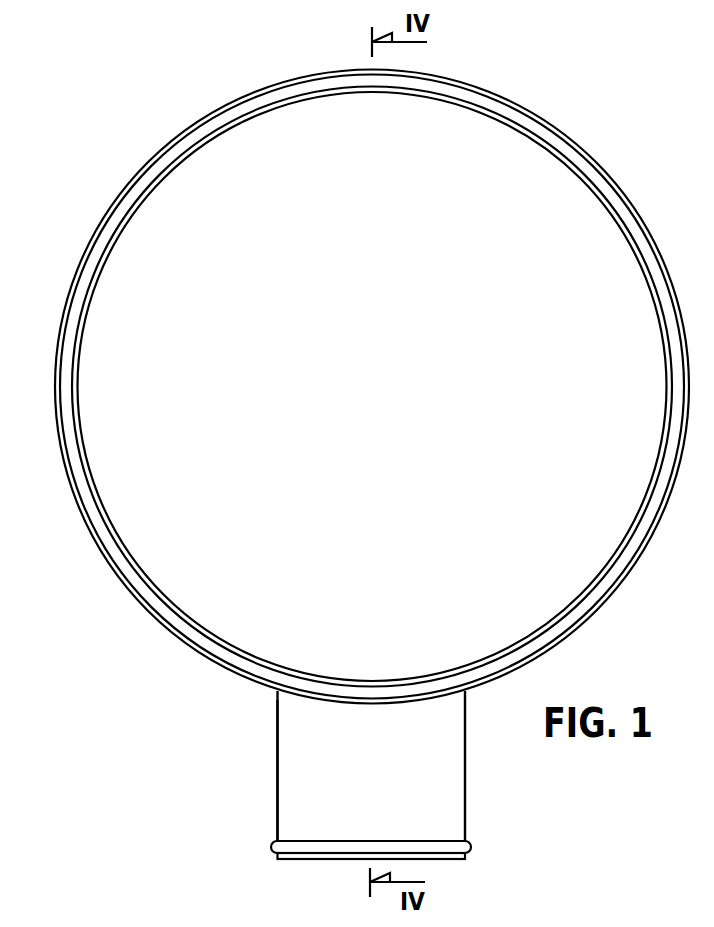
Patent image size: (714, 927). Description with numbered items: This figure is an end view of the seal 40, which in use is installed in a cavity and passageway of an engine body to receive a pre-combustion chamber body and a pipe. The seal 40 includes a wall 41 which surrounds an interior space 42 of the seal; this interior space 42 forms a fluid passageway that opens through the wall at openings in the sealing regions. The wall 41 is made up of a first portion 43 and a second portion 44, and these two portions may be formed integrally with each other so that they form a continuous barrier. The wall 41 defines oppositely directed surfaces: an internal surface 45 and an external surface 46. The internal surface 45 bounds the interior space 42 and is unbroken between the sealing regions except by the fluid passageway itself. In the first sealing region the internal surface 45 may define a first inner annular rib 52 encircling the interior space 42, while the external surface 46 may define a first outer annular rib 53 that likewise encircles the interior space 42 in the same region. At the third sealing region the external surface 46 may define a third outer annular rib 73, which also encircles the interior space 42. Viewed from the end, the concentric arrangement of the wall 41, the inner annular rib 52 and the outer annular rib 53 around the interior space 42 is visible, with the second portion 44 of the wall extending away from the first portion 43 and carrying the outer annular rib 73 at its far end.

The seal 40 is at (129, 96).
The wall 41 is at (398, 788).
The interior space 42 is at (373, 406).
The first portion 43 is at (175, 665).
The second portion 44 is at (254, 780).
The internal surface 45 is at (137, 492).
The external surface 46 is at (94, 582).
The first inner annular rib 52 is at (612, 560).
The first outer annular rib 53 is at (632, 570).
The third outer annular rib 73 is at (428, 840).